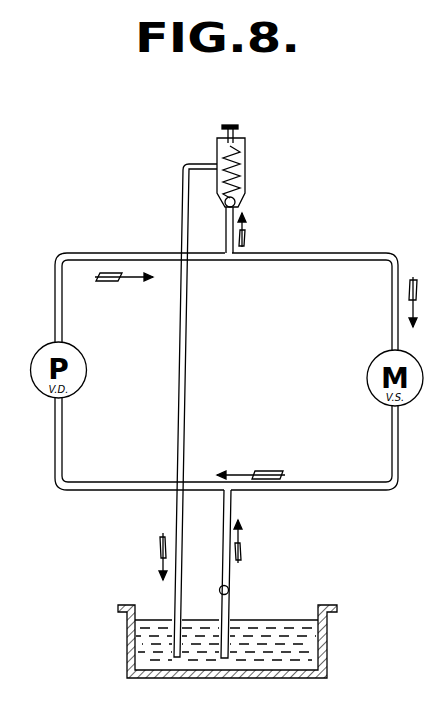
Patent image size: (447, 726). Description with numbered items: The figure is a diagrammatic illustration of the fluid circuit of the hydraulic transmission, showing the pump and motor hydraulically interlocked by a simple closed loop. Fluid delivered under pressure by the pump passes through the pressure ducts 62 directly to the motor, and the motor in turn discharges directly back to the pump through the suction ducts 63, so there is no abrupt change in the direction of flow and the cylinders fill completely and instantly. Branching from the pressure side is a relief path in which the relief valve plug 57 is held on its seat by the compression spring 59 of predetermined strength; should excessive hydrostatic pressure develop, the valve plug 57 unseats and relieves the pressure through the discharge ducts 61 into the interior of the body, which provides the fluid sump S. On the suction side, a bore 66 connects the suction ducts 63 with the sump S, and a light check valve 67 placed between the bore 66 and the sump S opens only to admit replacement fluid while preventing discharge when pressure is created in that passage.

The compression spring 59 is at (245, 151).
The relief valve plug 57 is at (236, 201).
The pressure ducts 62 is at (366, 253).
The discharge ducts 61 is at (185, 380).
The suction ducts 63 is at (312, 491).
The check valve 67 is at (228, 590).
The bore 66 is at (226, 618).
The fluid sump S is at (328, 653).